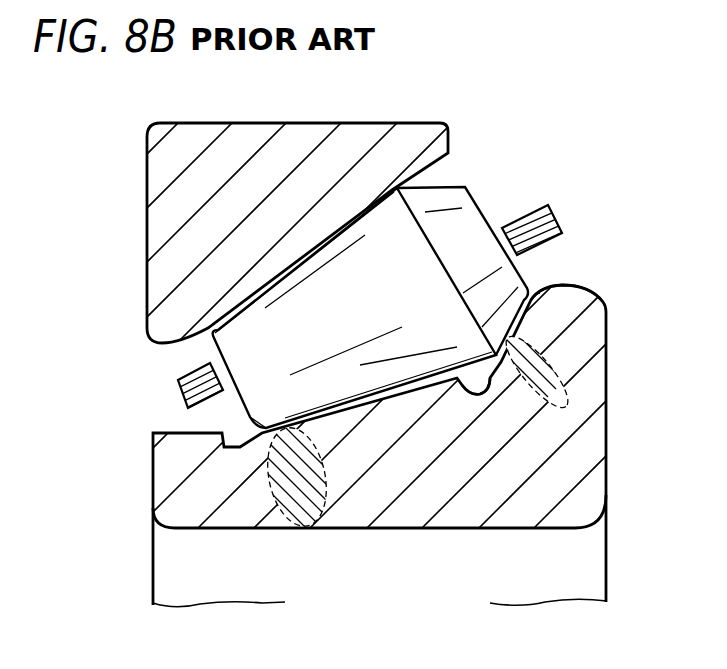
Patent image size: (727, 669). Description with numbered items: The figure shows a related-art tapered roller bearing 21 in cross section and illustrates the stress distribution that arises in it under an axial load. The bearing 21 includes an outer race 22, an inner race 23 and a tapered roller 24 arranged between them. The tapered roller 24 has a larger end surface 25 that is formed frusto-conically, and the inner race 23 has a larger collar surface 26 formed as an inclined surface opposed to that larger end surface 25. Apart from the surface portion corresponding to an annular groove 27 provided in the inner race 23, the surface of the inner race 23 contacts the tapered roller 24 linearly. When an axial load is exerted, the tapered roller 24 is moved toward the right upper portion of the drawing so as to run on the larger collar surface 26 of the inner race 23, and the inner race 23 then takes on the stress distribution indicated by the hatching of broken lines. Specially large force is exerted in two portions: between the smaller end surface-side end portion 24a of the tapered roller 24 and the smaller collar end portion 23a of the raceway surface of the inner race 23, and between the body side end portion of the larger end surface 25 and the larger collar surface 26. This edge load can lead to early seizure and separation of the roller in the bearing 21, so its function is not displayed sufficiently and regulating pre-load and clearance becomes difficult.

The tapered roller bearing 21 is at (577, 268).
The outer race 22 is at (420, 128).
The inner race 23 is at (585, 477).
The smaller collar end portion 23a is at (283, 433).
The tapered roller 24 is at (226, 344).
The smaller end surface-side end portion 24a is at (266, 422).
The larger end surface 25 is at (453, 198).
The larger collar surface 26 is at (604, 340).
The annular groove 27 is at (494, 397).